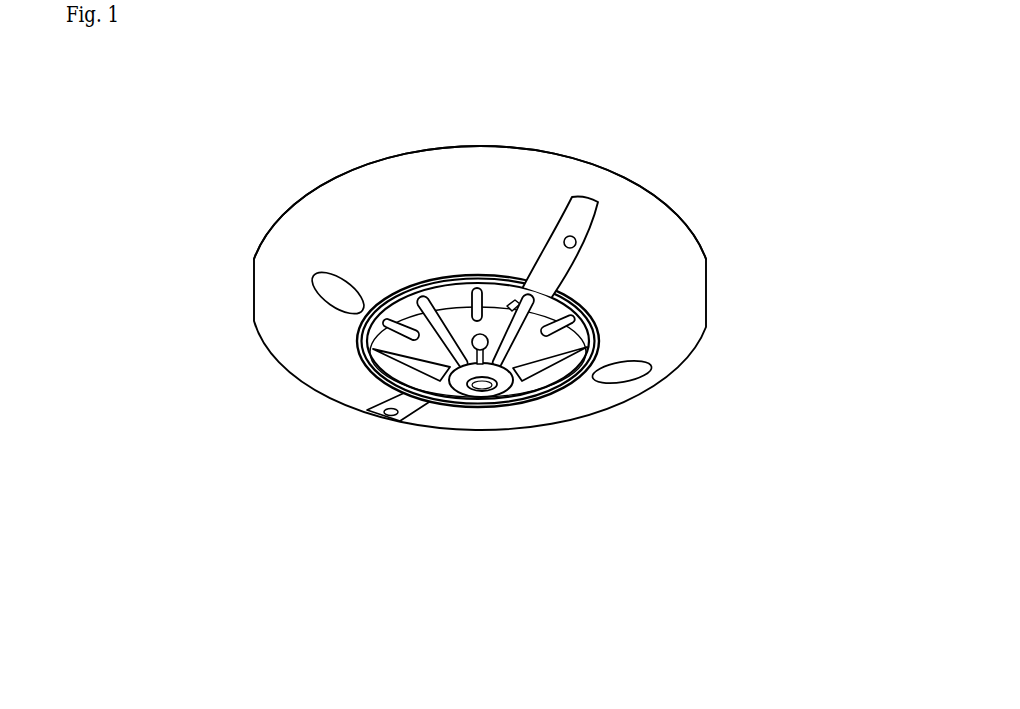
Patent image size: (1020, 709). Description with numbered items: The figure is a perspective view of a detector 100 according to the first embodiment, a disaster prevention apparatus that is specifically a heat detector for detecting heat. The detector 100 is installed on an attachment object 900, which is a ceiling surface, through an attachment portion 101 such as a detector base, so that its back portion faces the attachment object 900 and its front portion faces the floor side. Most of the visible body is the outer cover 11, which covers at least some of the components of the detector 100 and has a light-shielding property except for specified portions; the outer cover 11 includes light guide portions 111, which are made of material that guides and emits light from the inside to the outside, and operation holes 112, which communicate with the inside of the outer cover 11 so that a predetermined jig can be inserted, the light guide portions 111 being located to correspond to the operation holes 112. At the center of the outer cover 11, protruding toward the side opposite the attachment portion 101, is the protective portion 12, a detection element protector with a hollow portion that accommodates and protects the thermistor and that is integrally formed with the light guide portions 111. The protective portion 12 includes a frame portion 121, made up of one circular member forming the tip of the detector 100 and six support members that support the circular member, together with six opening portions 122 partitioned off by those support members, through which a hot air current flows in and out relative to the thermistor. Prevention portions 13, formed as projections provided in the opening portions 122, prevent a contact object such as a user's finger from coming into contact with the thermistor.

The detector 100 is at (697, 452).
The attachment object 900 is at (734, 152).
The outer cover 11 is at (670, 312).
The attachment portion 101 is at (500, 148).
The light guide portion 111 is at (583, 223).
The operation hole 112 is at (583, 252).
The protective portion 12 is at (479, 314).
The frame portion 121 is at (502, 398).
The opening portion 122 is at (542, 345).
The prevention portion 13 is at (400, 403).